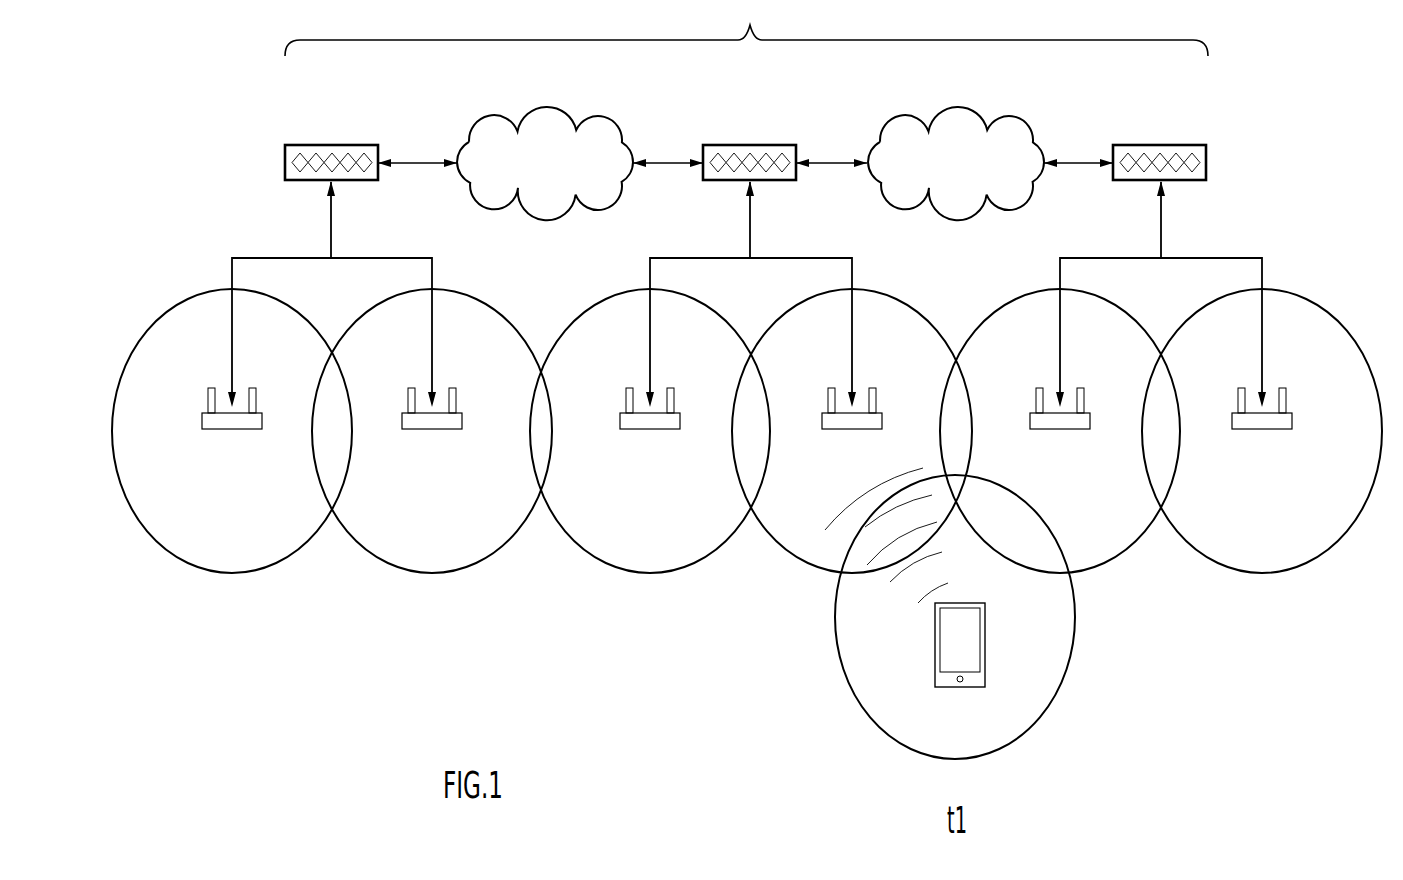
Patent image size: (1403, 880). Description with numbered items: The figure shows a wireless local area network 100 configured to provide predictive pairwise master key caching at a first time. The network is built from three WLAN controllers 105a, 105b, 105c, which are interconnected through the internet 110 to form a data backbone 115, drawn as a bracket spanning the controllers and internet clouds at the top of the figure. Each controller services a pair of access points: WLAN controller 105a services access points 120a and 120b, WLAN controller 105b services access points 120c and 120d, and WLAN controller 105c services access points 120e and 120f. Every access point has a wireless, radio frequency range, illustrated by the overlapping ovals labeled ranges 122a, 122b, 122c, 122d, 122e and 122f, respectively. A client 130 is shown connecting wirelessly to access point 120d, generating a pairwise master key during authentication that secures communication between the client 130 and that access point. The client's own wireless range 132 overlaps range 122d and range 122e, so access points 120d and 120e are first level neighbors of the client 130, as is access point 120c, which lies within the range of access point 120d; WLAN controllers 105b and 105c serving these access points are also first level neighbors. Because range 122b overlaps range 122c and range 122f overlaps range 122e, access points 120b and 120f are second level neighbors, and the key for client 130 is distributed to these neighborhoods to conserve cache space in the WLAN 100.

The wireless local area network 100 is at (170, 70).
The WLAN controller 105a is at (331, 144).
The WLAN controller 105b is at (749, 144).
The WLAN controller 105c is at (1161, 144).
The internet 110 is at (546, 106).
The data backbone 115 is at (746, 28).
The access point 120a is at (213, 430).
The access point 120b is at (413, 430).
The access point 120c is at (631, 430).
The access point 120d is at (833, 430).
The access point 120e is at (1041, 430).
The access point 120f is at (1243, 430).
The wireless range 122a is at (232, 574).
The wireless range 122b is at (432, 574).
The wireless range 122c is at (650, 574).
The wireless range 122d is at (799, 560).
The wireless range 122e is at (1103, 566).
The wireless range 122f is at (1262, 574).
The client 130 is at (958, 688).
The wireless range 132 is at (836, 650).